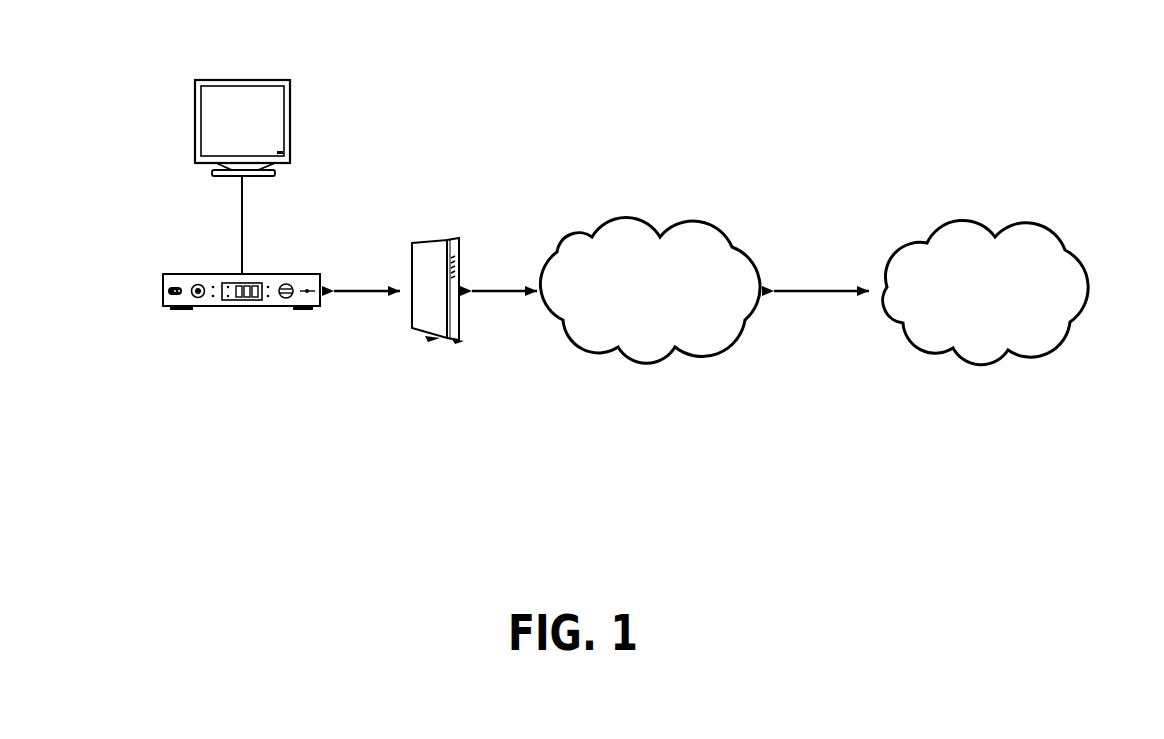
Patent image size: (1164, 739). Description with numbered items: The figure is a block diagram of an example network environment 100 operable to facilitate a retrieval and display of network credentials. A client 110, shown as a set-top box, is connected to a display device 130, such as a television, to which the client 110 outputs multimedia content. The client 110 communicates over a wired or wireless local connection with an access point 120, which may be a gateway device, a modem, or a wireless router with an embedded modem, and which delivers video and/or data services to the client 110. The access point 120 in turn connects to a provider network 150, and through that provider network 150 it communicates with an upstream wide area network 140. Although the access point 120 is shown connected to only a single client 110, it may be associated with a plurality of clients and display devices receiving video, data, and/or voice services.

The network environment 100 is at (1068, 601).
The client 110 is at (231, 310).
The access point 120 is at (453, 344).
The display device 130 is at (201, 165).
The wide area network (WAN) 140 is at (973, 365).
The provider network 150 is at (628, 360).